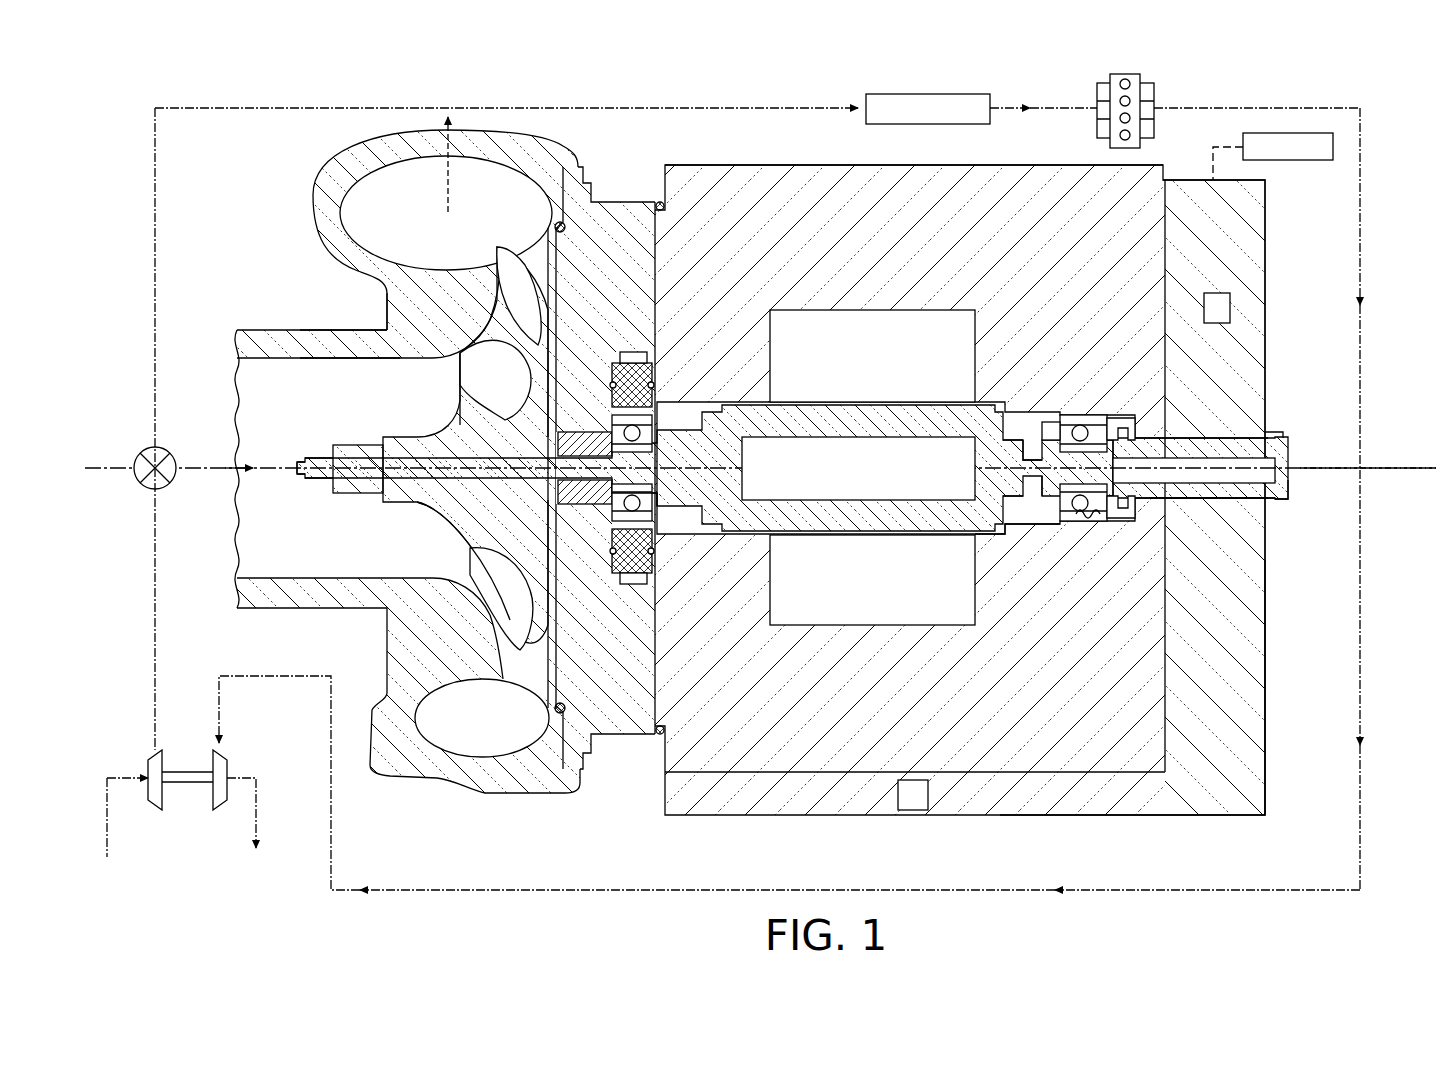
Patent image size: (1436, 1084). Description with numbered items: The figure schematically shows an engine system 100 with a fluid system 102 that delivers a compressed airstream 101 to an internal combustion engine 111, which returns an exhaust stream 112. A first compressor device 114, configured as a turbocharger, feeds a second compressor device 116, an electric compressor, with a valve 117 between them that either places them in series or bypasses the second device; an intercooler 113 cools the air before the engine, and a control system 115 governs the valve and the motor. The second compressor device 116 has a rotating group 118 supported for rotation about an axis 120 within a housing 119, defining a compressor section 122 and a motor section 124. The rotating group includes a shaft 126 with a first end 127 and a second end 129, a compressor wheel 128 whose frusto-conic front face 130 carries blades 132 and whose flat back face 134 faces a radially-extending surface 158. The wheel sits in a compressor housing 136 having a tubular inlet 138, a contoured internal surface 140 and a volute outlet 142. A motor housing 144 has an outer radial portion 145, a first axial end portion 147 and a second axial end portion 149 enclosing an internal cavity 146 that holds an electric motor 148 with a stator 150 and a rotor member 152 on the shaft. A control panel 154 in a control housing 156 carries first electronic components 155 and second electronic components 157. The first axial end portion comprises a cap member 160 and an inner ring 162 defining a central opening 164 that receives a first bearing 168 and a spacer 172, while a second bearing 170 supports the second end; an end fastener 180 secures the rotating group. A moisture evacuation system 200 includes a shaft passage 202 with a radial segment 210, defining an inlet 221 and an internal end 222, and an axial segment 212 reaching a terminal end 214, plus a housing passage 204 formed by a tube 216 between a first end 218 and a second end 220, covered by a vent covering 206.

The engine system 100 is at (1335, 106).
The compressed airstream 101 is at (596, 108).
The fluid system 102 is at (127, 374).
The internal combustion engine 111 is at (1154, 83).
The exhaust stream 112 is at (1228, 108).
The intercooler 113 is at (955, 94).
The first compressor device 114 is at (138, 765).
The control system 115 is at (1290, 161).
The second compressor device 116 is at (297, 264).
The valve 117 is at (133, 467).
The rotating group 118 is at (466, 425).
The housing 119 is at (406, 315).
The axis 120 is at (1397, 470).
The compressor section 122 is at (457, 791).
The motor section 124 is at (786, 766).
The shaft 126 is at (357, 484).
The first end 127 is at (300, 479).
The compressor wheel 128 is at (503, 513).
The second end 129 is at (1087, 516).
The front face 130 is at (523, 553).
The blades 132 is at (457, 358).
The back face 134 is at (560, 358).
The compressor housing 136 is at (348, 345).
The inlet 138 is at (245, 356).
The internal surface 140 is at (466, 425).
The outlet 142 is at (392, 228).
The motor housing 144 is at (736, 200).
The outer radial portion 145 is at (996, 185).
The internal cavity 146 is at (1025, 536).
The first axial end portion 147 is at (624, 256).
The electric motor 148 is at (917, 330).
The second axial end portion 149 is at (1180, 586).
The stator 150 is at (850, 371).
The rotor member 152 is at (840, 483).
The control panel 154 is at (1265, 816).
The first electronic components 155 is at (913, 812).
The control housing 156 is at (1255, 568).
The second electronic components 157 is at (1217, 292).
The radially-extending surface 158 is at (497, 263).
The cap member 160 is at (655, 322).
The inner ring 162 is at (648, 378).
The central opening 164 is at (652, 480).
The first bearing 168 is at (648, 432).
The second bearing 170 is at (1044, 420).
The spacer 172 is at (578, 433).
The end fastener 180 is at (355, 450).
The moisture evacuation system 200 is at (1228, 458).
The shaft passage 202 is at (1097, 455).
The housing passage 204 is at (1192, 476).
The vent covering 206 is at (1285, 430).
The radial segment 210 is at (1027, 462).
The axial segment 212 is at (1047, 488).
The terminal end 214 is at (1180, 442).
The tube 216 is at (1220, 494).
The first end 218 is at (1107, 494).
The second end 220 is at (1272, 504).
The inlet 221 is at (1038, 433).
The internal end 222 is at (1027, 483).